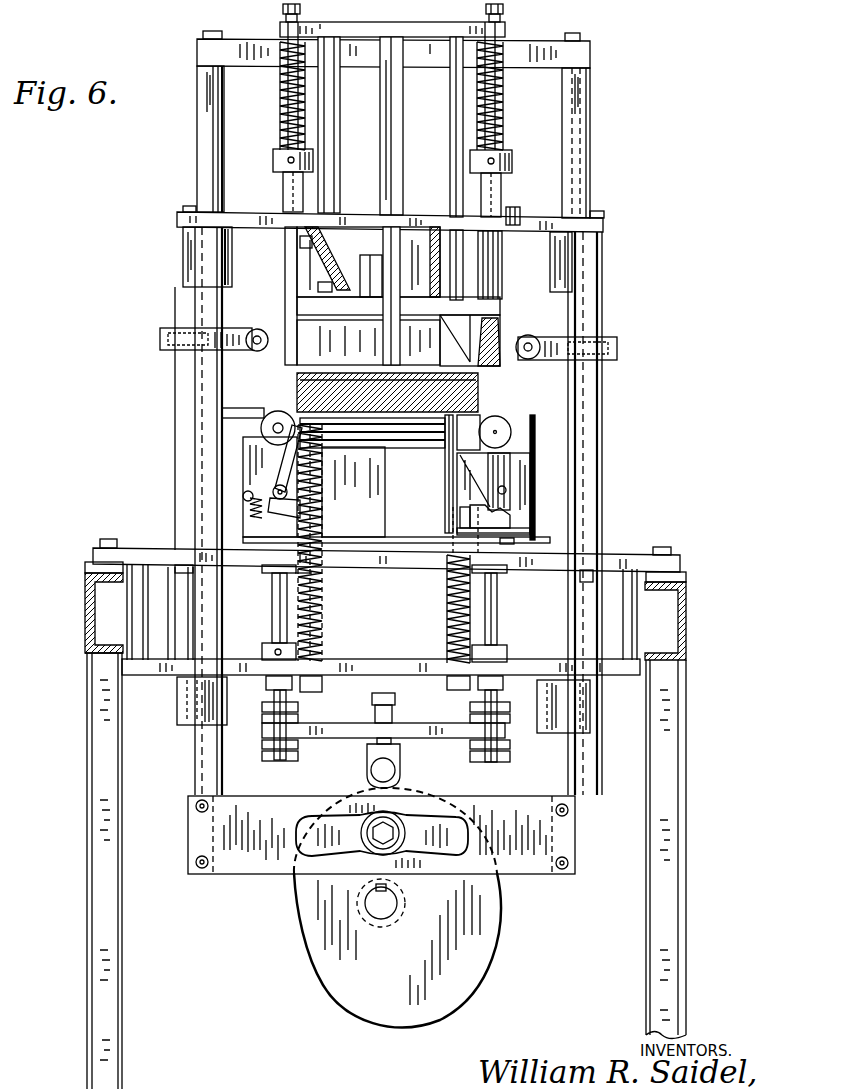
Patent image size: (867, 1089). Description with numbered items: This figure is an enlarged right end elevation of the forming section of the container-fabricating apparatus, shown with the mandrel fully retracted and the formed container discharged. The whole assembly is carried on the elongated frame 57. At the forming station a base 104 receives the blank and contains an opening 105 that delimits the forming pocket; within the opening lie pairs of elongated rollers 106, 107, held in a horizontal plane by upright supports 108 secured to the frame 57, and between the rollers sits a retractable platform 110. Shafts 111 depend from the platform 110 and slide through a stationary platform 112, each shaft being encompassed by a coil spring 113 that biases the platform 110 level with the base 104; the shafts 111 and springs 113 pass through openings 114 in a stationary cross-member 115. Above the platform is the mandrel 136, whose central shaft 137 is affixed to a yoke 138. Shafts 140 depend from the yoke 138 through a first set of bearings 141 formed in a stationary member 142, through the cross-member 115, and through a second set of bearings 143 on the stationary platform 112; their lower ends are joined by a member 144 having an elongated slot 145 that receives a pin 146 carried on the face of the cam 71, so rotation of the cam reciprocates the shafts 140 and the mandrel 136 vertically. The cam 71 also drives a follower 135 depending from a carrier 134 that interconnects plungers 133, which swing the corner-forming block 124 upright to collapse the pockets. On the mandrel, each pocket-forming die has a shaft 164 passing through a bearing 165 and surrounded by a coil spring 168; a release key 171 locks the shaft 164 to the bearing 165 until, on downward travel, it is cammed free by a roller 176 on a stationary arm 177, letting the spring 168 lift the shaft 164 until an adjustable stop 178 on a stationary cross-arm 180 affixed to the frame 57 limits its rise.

The frame 57 is at (78, 961).
The cam 71 is at (488, 924).
The base 104 is at (258, 410).
The opening 105 is at (298, 412).
The elongated rollers 106 is at (468, 456).
The elongated rollers 107 is at (262, 428).
The upright supports 108 is at (528, 497).
The platform 110 is at (300, 450).
The shafts 111 is at (318, 472).
The stationary platform 112 is at (343, 663).
The coil springs 113 is at (322, 612).
The openings 114 is at (295, 576).
The cross-member 115 is at (95, 550).
The corner-forming block 124 is at (507, 517).
The plungers 133 is at (275, 624).
The carrier 134 is at (305, 740).
The follower 135 is at (402, 764).
The mandrel 136 is at (472, 330).
The shaft 137 is at (397, 150).
The yoke 138 is at (548, 50).
The shafts 140 is at (205, 150).
The bearings 141 is at (195, 260).
The stationary member 142 is at (178, 213).
The bearings 143 is at (183, 720).
The member 144 is at (540, 875).
The elongated slot 145 is at (316, 845).
The pin 146 is at (367, 848).
The shaft 164 is at (285, 100).
The bearing 165 is at (505, 185).
The coil spring 168 is at (285, 125).
The release key 171 is at (514, 209).
The roller 176 is at (262, 330).
The stationary arm 177 is at (170, 330).
The adjustable stop 178 is at (283, 16).
The cross-arm 180 is at (412, 36).